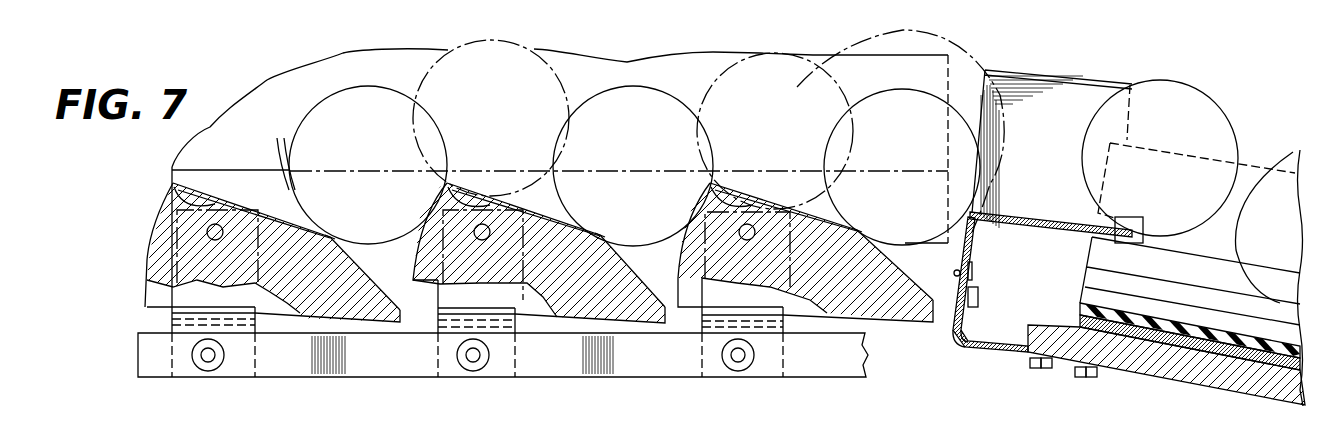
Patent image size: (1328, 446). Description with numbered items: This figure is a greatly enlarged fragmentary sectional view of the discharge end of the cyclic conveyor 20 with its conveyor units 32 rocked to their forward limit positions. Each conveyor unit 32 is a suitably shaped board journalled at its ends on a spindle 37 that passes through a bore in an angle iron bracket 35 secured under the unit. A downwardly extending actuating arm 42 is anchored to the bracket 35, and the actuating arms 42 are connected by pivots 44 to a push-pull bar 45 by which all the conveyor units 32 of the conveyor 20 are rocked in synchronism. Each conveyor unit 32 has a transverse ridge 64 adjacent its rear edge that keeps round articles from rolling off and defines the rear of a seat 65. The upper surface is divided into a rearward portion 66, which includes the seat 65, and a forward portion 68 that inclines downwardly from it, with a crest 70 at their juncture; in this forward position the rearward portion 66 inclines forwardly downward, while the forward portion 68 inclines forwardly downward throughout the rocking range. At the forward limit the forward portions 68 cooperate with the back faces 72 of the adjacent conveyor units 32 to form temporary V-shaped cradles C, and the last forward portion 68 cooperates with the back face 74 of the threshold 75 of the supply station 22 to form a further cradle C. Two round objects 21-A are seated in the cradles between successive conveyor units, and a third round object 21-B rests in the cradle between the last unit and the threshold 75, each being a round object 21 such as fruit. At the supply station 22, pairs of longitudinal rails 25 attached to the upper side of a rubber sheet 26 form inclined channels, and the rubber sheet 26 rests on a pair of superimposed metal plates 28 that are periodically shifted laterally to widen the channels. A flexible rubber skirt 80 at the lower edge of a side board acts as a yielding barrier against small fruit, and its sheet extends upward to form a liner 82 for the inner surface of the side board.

The cyclic conveyor 20 is at (130, 323).
The round object 21 is at (1218, 143).
The round object seated in cradle between conveyor units 21-A is at (344, 92).
The round object seated in cradle at threshold 21-B is at (973, 122).
The supply station 22 is at (1141, 377).
The longitudinal rail 25 is at (1098, 277).
The rubber sheet 26 is at (1080, 307).
The metal plate 28 is at (1220, 340).
The conveyor unit 32 is at (320, 300).
The angle iron bracket 35 is at (181, 296).
The spindle 37 is at (216, 224).
The actuating arm 42 is at (243, 378).
The pivot 44 is at (208, 371).
The push-pull bar 45 is at (672, 368).
The transverse ridge 64 is at (181, 191).
The seat 65 is at (176, 210).
The rearward portion 66 is at (270, 212).
The forward portion 68 is at (355, 263).
The crest 70 is at (328, 232).
The back face 72 is at (150, 257).
The back face of threshold 74 is at (972, 275).
The threshold 75 is at (1012, 217).
The flexible rubber skirt 80 is at (283, 188).
The liner 82 is at (304, 82).
The cradle C is at (403, 238).